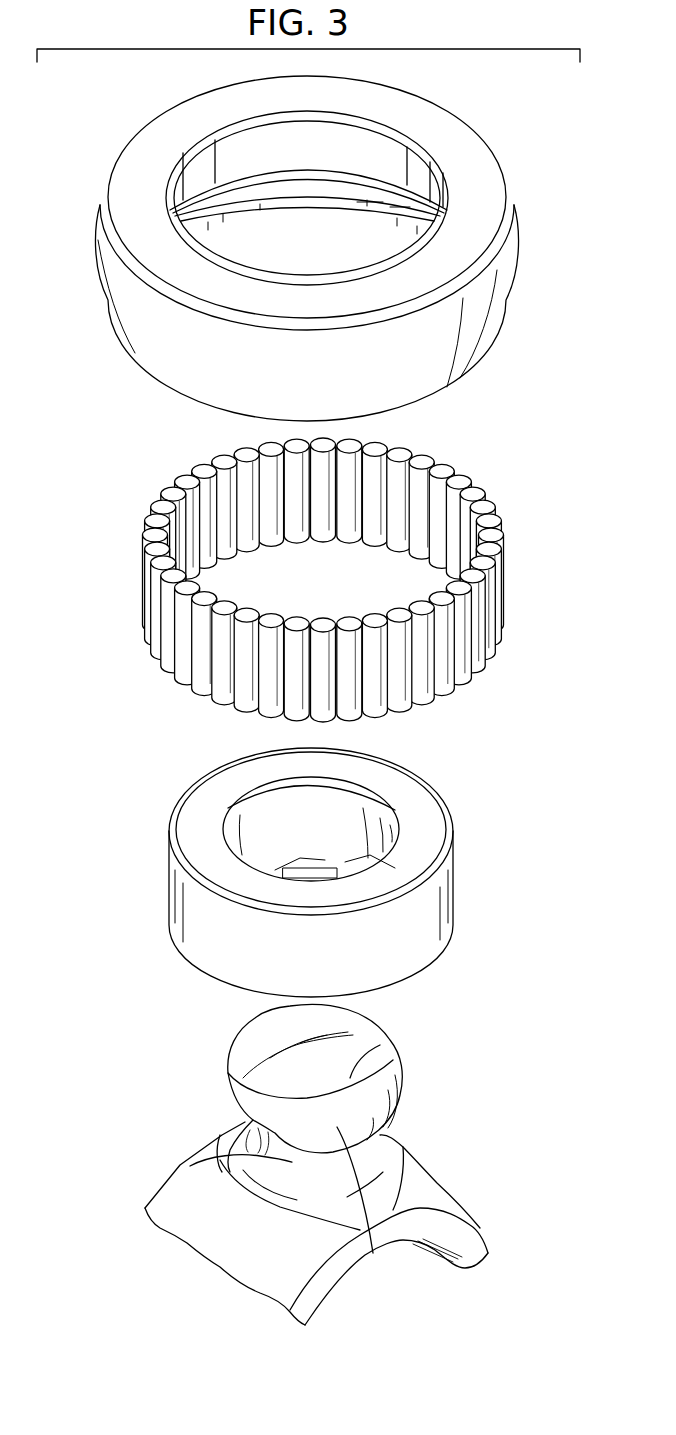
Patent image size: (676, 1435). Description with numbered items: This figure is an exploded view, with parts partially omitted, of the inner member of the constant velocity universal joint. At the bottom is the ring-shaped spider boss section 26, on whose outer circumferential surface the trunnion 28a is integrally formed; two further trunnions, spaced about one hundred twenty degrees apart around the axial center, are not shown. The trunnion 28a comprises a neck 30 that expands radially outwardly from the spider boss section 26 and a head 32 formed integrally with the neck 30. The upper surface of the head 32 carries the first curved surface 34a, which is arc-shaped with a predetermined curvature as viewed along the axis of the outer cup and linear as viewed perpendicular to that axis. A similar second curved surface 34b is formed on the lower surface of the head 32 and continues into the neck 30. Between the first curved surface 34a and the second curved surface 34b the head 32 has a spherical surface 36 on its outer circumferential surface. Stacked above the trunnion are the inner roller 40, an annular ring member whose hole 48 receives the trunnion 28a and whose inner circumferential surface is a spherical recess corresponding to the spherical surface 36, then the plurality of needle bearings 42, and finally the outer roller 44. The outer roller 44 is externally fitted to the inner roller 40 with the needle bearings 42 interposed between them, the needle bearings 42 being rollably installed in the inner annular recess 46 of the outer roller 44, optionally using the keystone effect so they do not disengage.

The spider boss section 26 is at (453, 1227).
The trunnion 28a is at (253, 1040).
The neck 30 is at (190, 1166).
The head 32 is at (373, 1253).
The first curved surface 34a is at (380, 1045).
The second curved surface 34b is at (257, 1123).
The spherical surface 36 is at (373, 1098).
The inner roller 40 is at (440, 788).
The needle bearings 42 is at (180, 622).
The outer roller 44 is at (490, 155).
The inner annular recess 46 is at (395, 153).
The hole 48 is at (357, 818).